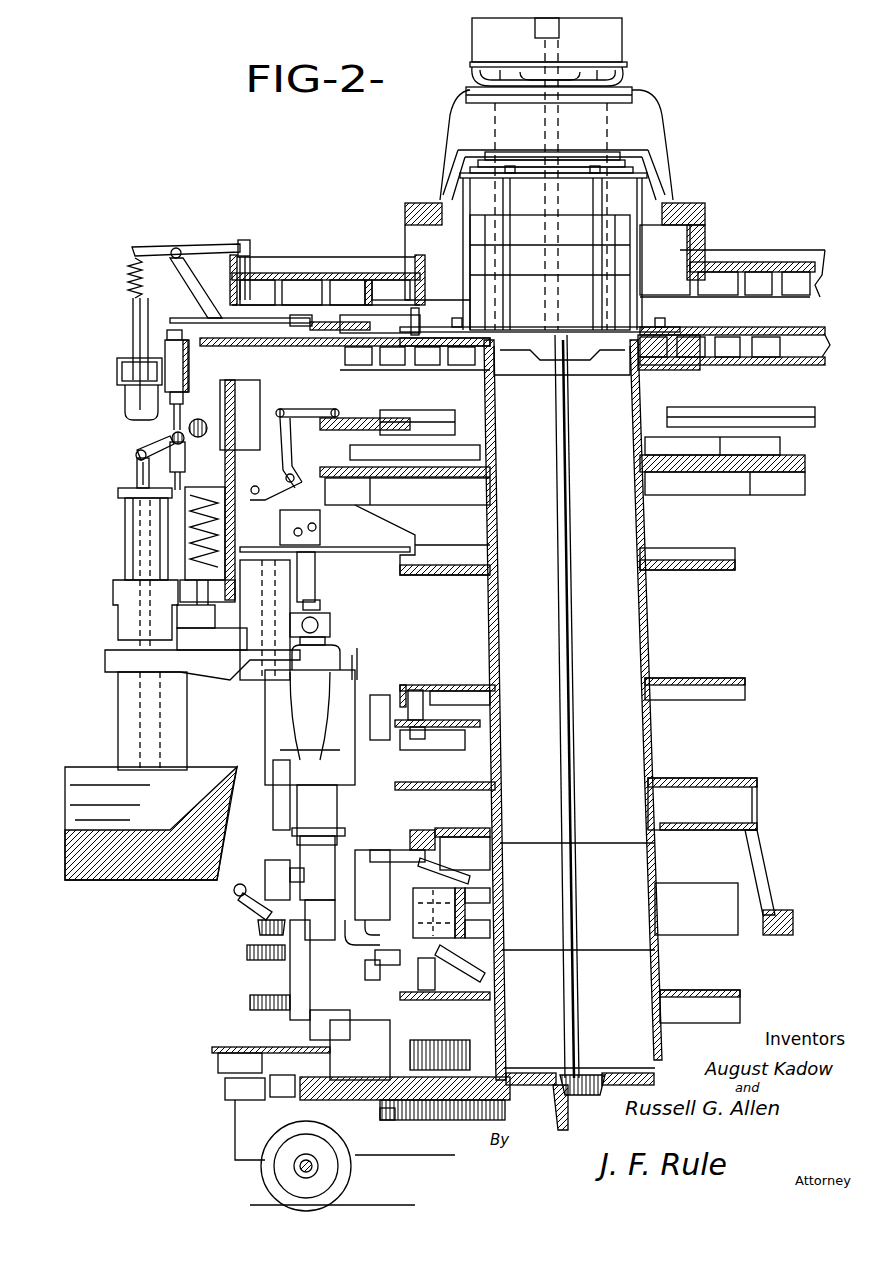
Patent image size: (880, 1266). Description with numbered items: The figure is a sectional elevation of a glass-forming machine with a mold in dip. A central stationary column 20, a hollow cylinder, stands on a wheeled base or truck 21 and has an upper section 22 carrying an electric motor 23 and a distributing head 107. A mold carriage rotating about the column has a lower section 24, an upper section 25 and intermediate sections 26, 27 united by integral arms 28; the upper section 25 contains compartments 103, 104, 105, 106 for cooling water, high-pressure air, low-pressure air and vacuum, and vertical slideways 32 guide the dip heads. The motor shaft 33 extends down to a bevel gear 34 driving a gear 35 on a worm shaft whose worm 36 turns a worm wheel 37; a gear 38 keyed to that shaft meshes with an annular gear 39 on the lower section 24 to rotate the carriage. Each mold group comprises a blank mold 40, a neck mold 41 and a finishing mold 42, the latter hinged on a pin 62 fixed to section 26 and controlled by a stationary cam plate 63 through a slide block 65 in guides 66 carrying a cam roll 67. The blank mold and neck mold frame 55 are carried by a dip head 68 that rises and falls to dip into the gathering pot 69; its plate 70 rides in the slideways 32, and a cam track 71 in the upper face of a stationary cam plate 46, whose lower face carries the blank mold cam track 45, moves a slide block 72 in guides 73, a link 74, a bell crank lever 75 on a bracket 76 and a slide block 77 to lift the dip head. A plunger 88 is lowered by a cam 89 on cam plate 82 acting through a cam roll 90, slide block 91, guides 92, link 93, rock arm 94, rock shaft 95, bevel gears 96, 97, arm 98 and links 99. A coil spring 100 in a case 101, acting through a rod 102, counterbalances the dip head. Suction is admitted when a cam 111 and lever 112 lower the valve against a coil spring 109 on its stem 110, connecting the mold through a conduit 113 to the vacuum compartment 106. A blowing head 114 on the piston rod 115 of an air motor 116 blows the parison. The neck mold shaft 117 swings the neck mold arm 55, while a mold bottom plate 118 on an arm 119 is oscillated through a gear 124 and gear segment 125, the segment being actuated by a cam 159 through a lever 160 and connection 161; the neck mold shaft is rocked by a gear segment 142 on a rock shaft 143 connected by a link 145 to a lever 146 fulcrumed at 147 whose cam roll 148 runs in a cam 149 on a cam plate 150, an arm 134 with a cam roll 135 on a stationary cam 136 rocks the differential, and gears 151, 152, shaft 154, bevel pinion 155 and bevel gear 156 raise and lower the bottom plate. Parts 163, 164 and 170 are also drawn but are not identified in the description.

The central stationary column 20 is at (645, 610).
The wheeled base or truck 21 is at (235, 1130).
The upper section of column 22 is at (608, 297).
The electric motor 23 is at (618, 43).
The lower section of mold carriage 24 is at (740, 1008).
The upper section of mold carriage 25 is at (760, 327).
The intermediate section of mold carriage 26 is at (725, 778).
The intermediate section of mold carriage 27 is at (793, 920).
The integral arms 28 is at (765, 858).
The vertical slideways 32 is at (241, 415).
The motor shaft 33 is at (566, 426).
The bevel gear 34 is at (600, 1090).
The gear 35 is at (553, 1118).
The worm 36 is at (440, 1120).
The worm wheel 37 is at (380, 1118).
The gear 38 is at (460, 1040).
The annular gear 39 is at (410, 1036).
The blank mold 40 is at (118, 730).
The neck mold 41 is at (115, 643).
The finishing mold 42 is at (360, 675).
The cam track 45 is at (770, 495).
The stationary cam plate 46 is at (468, 505).
The neck mold frame 55 is at (200, 670).
The hinge pin 62 is at (385, 704).
The stationary cam plate 63 is at (735, 678).
The slide block 65 is at (440, 720).
The guides 66 is at (480, 712).
The cam roll 67 is at (418, 690).
The dip head 68 is at (212, 615).
The gathering pot or tank 69 is at (225, 770).
The integral plate 70 is at (249, 408).
The cam track 71 is at (782, 446).
The slide block 72 is at (372, 418).
The guides 73 is at (815, 410).
The link 74 is at (316, 410).
The bell crank lever 75 is at (282, 440).
The bracket 76 is at (300, 468).
The slide block 77 is at (240, 510).
The stationary cam plate 82 is at (230, 278).
The plunger 88 is at (118, 490).
The cam 89 is at (338, 280).
The cam roll 90 is at (350, 292).
The slide block 91 is at (372, 322).
The guides 92 is at (420, 325).
The link 93 is at (262, 322).
The rock arm 94 is at (167, 335).
The rock shaft 95 is at (190, 366).
The bevel gear 96 is at (172, 436).
The bevel gear 97 is at (198, 419).
The arm 98 is at (137, 452).
The links 99 is at (137, 465).
The coil spring 100 is at (133, 535).
The case 101 is at (133, 520).
The rod 102 is at (170, 556).
The compartment 103 is at (655, 360).
The compartment 104 is at (693, 337).
The compartment 105 is at (730, 360).
The compartment 106 is at (768, 360).
The distributing head 107 is at (640, 240).
The coil spring 109 is at (128, 274).
The valve stem 110 is at (133, 318).
The cam 111 is at (245, 257).
The lever 112 is at (210, 245).
The conduit 113 is at (125, 410).
The blowing head 114 is at (335, 640).
The piston rod 115 is at (315, 575).
The air motor 116 is at (325, 531).
The neck mold shaft 117 is at (273, 800).
The mold bottom plate 118 is at (337, 805).
The mold bottom arm 119 is at (290, 978).
The gear 124 is at (250, 1000).
The gear segment 125 is at (342, 1025).
The arm 134 is at (240, 1063).
The cam roll 135 is at (290, 1097).
The stationary cam 136 is at (225, 1092).
The gear segment 142 is at (321, 920).
The rock shaft 143 is at (405, 963).
The link 145 is at (345, 832).
The lever 146 is at (452, 866).
The fulcrum 147 is at (438, 834).
The cam roll 148 is at (490, 893).
The stationary cam 149 is at (490, 905).
The cam plate 150 is at (698, 895).
The gear 151 is at (247, 952).
The pinion 152 is at (258, 928).
The shaft 154 is at (265, 880).
The bevel pinion 155 is at (296, 874).
The bevel gear 156 is at (317, 868).
The cam 159 is at (490, 917).
The lever 160 is at (460, 965).
The operating connection 161 is at (370, 980).
The pivot 163 is at (234, 890).
The lever 164 is at (238, 912).
The cylinder 170 is at (275, 714).